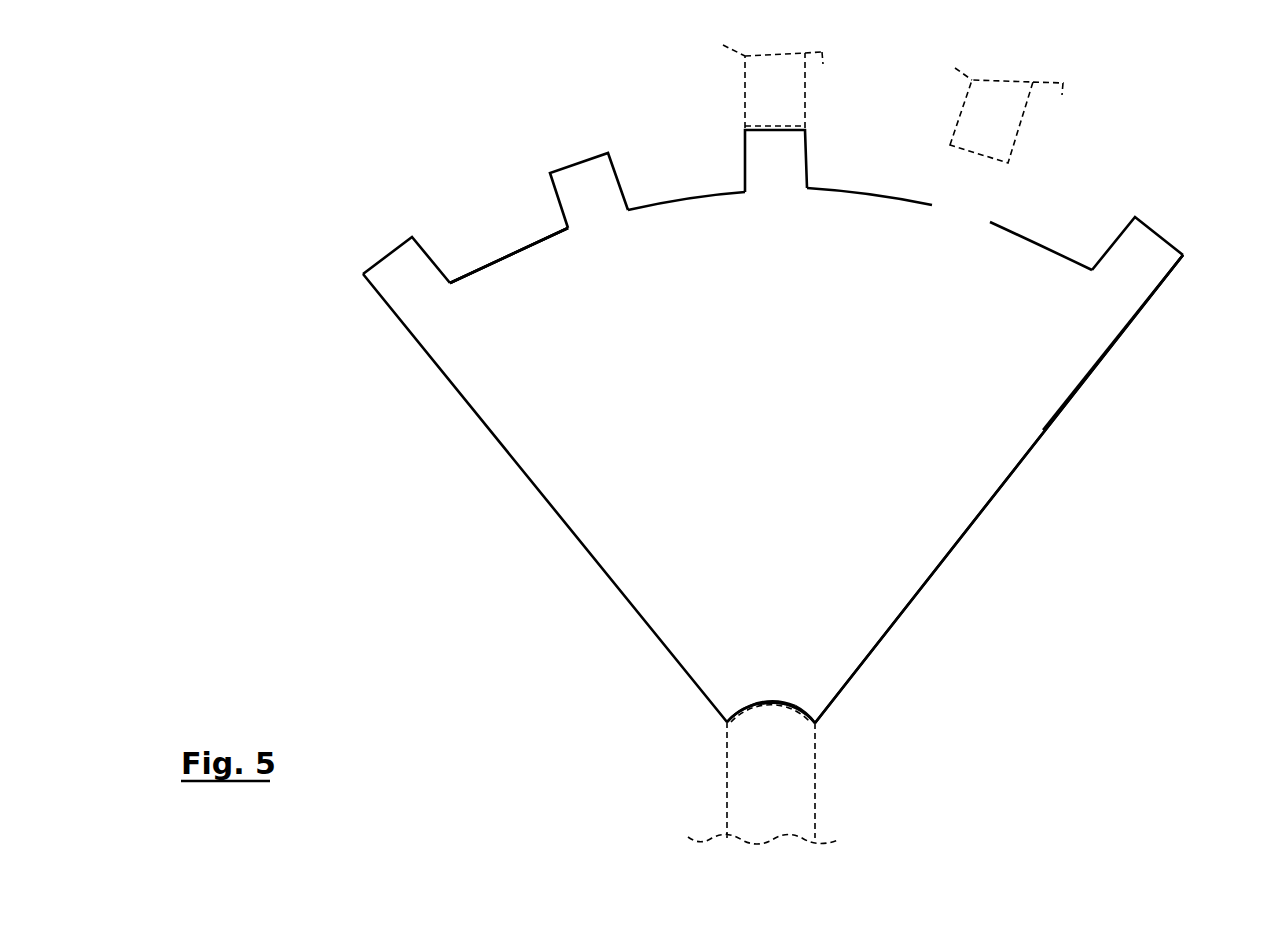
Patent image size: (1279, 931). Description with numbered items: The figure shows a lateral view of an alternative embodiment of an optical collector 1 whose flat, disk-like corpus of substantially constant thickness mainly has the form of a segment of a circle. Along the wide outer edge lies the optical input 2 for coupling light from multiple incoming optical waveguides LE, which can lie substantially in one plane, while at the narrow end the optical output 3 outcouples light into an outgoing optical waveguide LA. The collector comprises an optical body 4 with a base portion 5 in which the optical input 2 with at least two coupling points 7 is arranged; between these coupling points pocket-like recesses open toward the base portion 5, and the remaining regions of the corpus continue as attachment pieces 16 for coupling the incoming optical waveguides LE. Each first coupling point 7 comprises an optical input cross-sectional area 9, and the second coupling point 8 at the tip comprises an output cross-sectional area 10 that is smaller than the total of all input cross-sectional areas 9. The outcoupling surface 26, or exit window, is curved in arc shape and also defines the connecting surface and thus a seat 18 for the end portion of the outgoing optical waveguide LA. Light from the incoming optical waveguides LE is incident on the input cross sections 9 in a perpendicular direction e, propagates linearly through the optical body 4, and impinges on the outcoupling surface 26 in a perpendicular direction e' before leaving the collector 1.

The optical collector 1 is at (1113, 403).
The optical input 2 is at (1173, 277).
The optical output 3 is at (720, 718).
The optical body 4 is at (1088, 327).
The base portion 5 is at (541, 237).
The coupling points 7 is at (387, 242).
The second coupling point 8 is at (790, 700).
The optical input cross-sectional area 9 is at (368, 253).
The output cross-sectional area 10 is at (778, 718).
The attachment pieces 16 is at (1178, 247).
The seat 18 is at (745, 723).
The outcoupling surface 26 is at (748, 703).
The perpendicular incidence direction e is at (977, 149).
The perpendicular direction onto outcoupling surface e' is at (812, 665).
The incoming optical waveguides LE is at (957, 107).
The outgoing optical waveguide LA is at (802, 808).